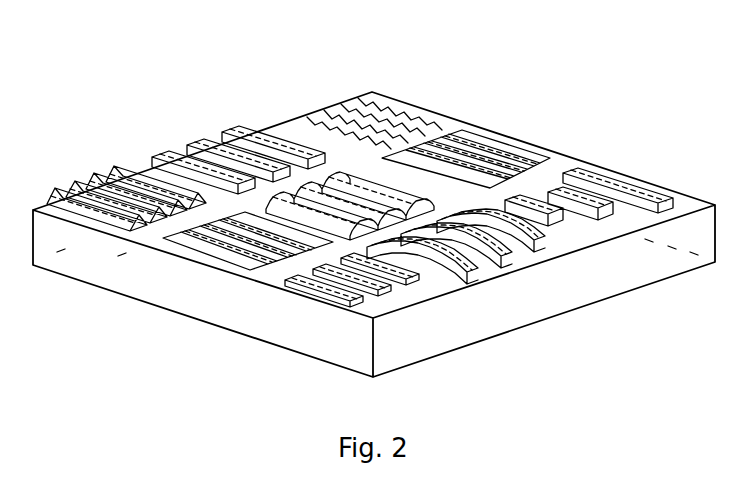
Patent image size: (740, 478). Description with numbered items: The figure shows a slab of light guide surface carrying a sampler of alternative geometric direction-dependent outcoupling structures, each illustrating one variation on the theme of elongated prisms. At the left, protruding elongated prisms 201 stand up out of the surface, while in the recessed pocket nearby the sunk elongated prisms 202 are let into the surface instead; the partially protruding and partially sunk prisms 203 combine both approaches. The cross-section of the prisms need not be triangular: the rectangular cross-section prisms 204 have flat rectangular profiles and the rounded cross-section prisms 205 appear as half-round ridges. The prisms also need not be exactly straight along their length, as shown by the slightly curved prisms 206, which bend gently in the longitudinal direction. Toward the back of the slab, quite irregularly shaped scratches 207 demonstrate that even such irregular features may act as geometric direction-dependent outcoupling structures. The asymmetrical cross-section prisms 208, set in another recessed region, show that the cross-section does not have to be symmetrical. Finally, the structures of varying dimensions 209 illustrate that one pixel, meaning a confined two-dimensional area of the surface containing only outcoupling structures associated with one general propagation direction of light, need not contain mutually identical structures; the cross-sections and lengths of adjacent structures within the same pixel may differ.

The protruding elongated prisms 201 is at (105, 214).
The sunk elongated prisms 202 is at (213, 250).
The partially protruding and partially sunk prisms 203 is at (325, 288).
The rectangular cross-section prisms 204 is at (219, 145).
The rounded cross-section prisms 205 is at (346, 180).
The slightly curved prisms 206 is at (522, 262).
The irregularly shaped scratches 207 is at (392, 124).
The asymmetrical cross-section prisms 208 is at (503, 150).
The structures of varying dimensions 209 is at (618, 192).